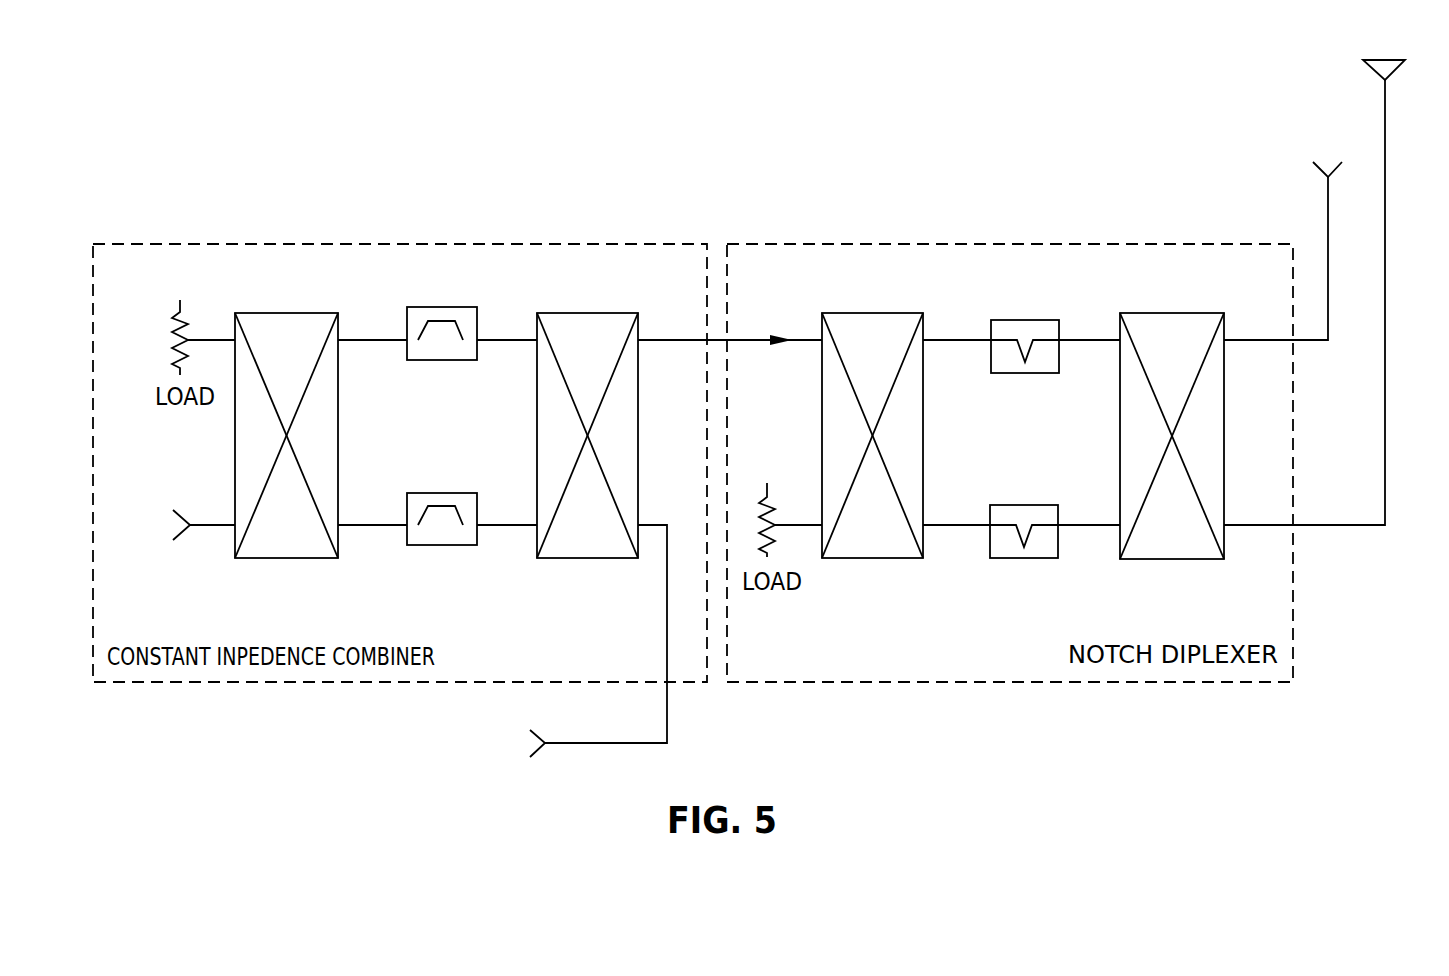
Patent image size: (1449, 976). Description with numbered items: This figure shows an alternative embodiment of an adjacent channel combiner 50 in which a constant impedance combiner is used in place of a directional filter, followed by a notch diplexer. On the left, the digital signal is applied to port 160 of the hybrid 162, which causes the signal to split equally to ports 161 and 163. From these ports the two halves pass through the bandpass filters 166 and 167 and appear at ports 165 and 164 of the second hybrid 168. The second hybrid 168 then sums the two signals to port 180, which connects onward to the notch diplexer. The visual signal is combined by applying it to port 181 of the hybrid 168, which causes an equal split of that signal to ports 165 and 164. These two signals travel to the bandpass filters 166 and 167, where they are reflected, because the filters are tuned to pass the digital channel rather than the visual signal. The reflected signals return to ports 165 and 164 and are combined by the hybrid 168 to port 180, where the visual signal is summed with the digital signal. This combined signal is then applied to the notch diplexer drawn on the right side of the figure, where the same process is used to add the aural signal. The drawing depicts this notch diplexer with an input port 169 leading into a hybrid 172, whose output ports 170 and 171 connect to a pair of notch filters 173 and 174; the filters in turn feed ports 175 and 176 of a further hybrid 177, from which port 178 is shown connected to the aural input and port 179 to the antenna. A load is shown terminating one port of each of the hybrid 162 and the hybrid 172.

The adjacent channel combiner 50 is at (722, 120).
The port 160 is at (235, 521).
The port 161 is at (341, 338).
The hybrid 162 is at (291, 313).
The port 163 is at (341, 523).
The port 164 is at (533, 513).
The port 165 is at (533, 328).
The bandpass filter 166 is at (442, 307).
The bandpass filter 167 is at (442, 493).
The second hybrid 168 is at (592, 313).
The notch diplexer input port 169 is at (820, 335).
The hybrid output port 170 is at (926, 337).
The hybrid output port 171 is at (924, 522).
The third hybrid 172 is at (876, 313).
The notch filter 173 is at (1026, 320).
The notch filter 174 is at (1026, 505).
The notch filter output port 175 is at (1120, 337).
The notch filter output port 176 is at (1120, 523).
The fourth hybrid 177 is at (1176, 313).
The aural input port 178 is at (1226, 337).
The antenna output port 179 is at (1224, 524).
The port 180 is at (640, 338).
The port 181 is at (642, 523).